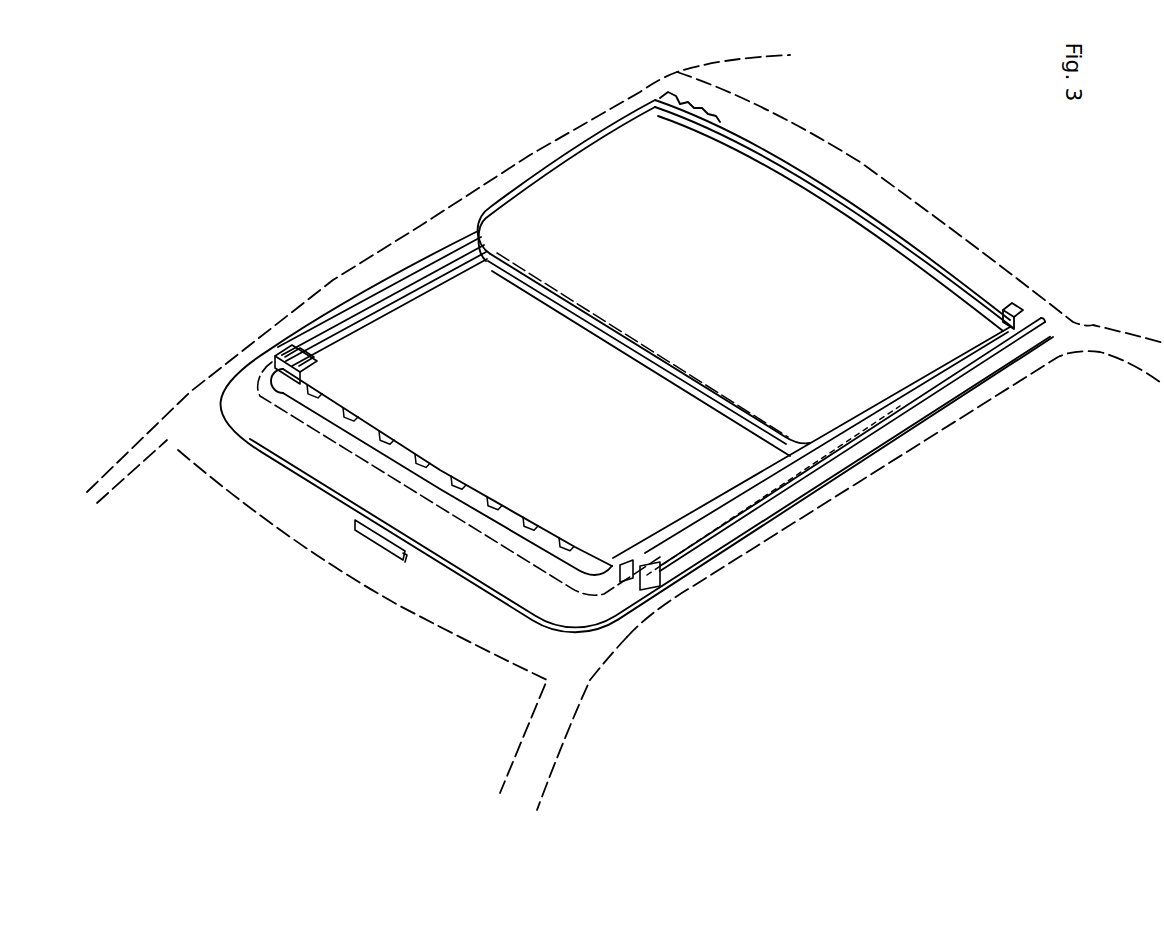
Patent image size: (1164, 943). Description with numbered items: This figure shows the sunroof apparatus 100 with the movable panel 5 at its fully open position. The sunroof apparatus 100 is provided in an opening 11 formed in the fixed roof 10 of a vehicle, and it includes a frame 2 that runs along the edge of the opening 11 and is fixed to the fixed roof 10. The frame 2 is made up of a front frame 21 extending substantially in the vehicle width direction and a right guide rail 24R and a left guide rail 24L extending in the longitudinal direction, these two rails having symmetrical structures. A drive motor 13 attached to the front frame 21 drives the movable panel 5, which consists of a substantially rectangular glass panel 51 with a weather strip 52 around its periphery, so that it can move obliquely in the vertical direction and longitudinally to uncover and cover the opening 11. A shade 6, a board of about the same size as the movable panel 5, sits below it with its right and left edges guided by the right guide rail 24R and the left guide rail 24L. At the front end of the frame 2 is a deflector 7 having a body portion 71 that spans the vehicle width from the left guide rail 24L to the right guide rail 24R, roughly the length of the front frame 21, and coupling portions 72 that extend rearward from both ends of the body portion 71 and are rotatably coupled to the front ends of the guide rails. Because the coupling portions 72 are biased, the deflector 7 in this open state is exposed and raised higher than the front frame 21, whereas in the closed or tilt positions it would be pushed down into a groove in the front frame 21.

The sunroof apparatus 100 is at (621, 393).
The fixed roof 10 is at (188, 418).
The frame 2 is at (621, 478).
The front frame 21 is at (262, 425).
The opening 11 is at (583, 441).
The movable panel 5 is at (730, 252).
The glass panel 51 is at (583, 173).
The weather strip 52 is at (620, 122).
The shade 6 is at (563, 317).
The deflector 7 is at (465, 467).
The body portion 71 is at (447, 465).
The coupling portions 72 is at (383, 466).
The drive motor 13 is at (387, 543).
The right guide rail 24R is at (397, 303).
The left guide rail 24L is at (765, 517).